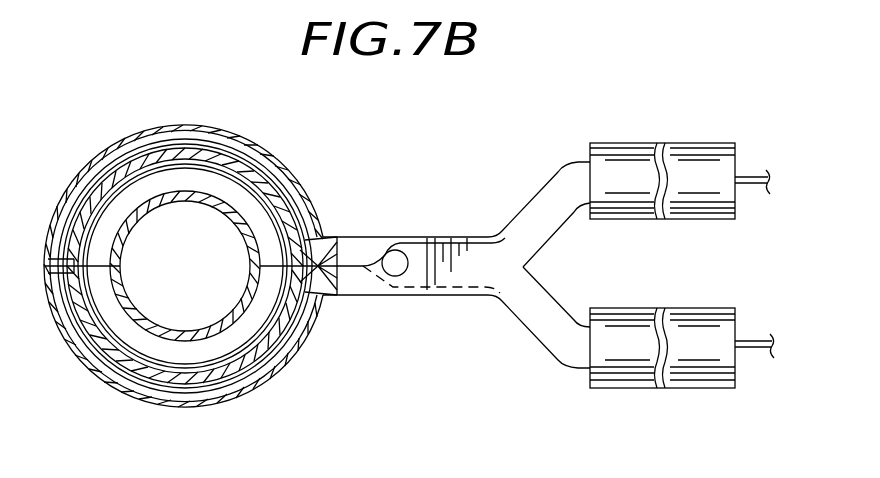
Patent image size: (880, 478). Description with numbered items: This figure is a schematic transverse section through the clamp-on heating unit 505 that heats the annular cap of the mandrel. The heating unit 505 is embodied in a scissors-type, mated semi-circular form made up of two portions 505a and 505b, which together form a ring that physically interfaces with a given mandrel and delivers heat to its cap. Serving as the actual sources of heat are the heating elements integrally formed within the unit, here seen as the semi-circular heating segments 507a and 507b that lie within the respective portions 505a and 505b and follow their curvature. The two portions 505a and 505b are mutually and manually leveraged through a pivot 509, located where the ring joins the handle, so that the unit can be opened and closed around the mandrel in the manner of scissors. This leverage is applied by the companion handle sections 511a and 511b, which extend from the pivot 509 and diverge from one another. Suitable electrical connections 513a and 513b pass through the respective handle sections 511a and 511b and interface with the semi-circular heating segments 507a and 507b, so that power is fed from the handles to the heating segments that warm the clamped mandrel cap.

The heating unit 505 is at (464, 156).
The heating unit portion 505a is at (107, 150).
The heating unit portion 505b is at (75, 347).
The semi-circular heating segment 507a is at (251, 152).
The semi-circular heating segment 507b is at (200, 392).
The pivot 509 is at (394, 277).
The handle section 511a is at (633, 384).
The handle section 511b is at (638, 155).
The electrical connection 513a is at (752, 348).
The electrical connection 513b is at (756, 180).